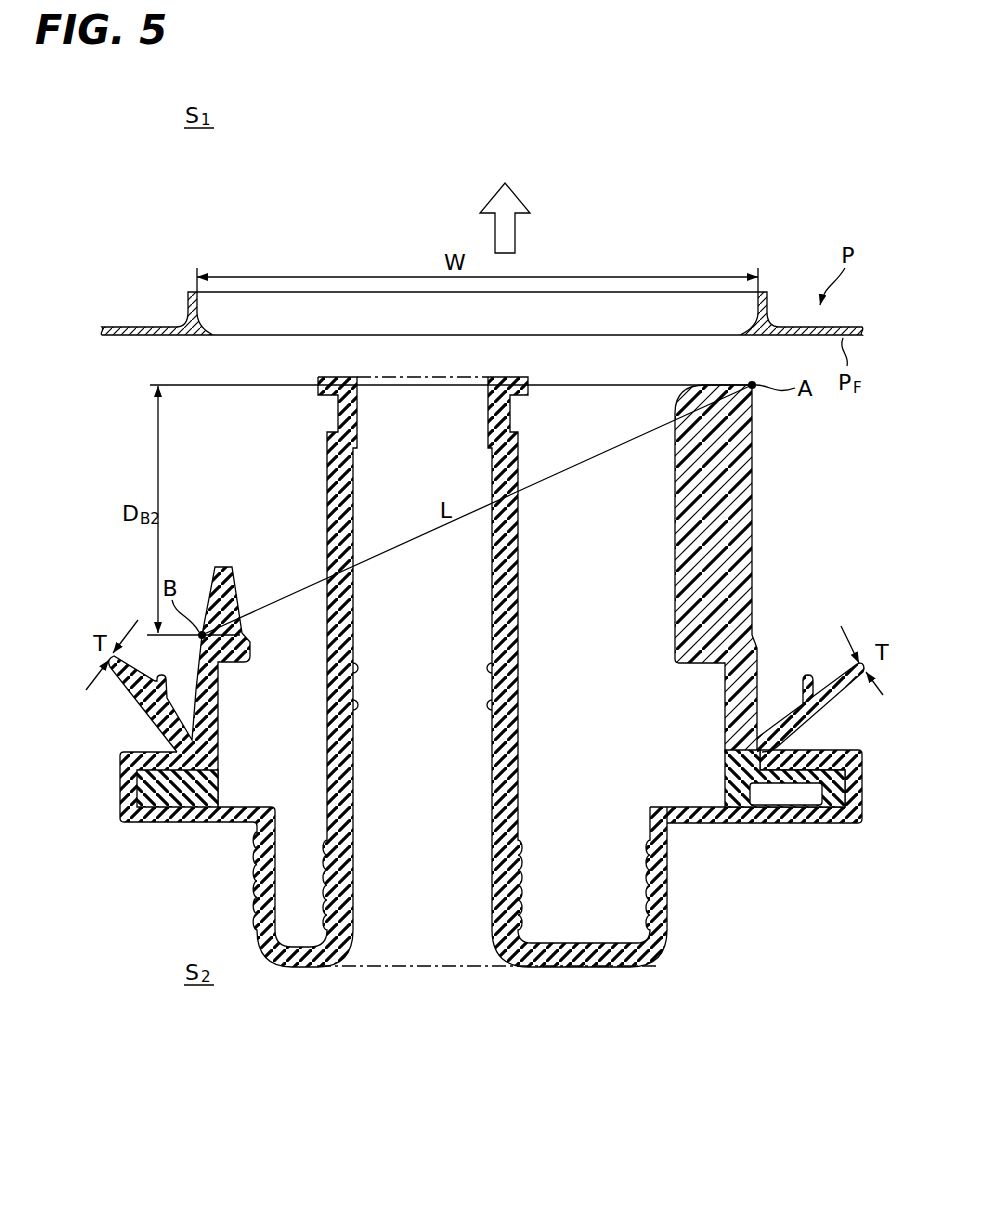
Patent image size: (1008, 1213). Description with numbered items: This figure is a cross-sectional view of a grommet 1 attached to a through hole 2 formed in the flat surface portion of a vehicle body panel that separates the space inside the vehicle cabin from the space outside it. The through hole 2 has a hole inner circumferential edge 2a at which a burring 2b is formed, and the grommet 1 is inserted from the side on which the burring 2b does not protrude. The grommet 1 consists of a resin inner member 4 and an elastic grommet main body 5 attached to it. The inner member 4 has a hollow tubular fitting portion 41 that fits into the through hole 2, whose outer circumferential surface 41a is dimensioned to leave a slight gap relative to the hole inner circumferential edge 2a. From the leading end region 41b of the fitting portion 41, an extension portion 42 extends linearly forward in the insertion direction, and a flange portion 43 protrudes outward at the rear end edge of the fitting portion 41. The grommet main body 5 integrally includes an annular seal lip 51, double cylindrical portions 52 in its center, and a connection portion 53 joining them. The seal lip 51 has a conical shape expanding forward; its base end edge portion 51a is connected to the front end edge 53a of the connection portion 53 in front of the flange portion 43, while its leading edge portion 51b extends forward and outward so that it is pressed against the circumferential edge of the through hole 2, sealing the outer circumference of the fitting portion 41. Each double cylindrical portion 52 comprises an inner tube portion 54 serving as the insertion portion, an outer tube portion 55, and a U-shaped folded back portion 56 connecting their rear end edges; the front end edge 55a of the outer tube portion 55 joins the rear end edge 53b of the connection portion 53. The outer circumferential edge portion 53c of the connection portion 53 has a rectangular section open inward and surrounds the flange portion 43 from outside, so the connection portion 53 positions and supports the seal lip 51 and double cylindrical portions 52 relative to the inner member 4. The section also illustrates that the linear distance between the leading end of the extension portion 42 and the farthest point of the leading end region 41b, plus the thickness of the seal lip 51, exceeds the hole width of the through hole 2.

The grommet 1 is at (262, 1040).
The through hole 2 is at (700, 240).
The hole inner circumferential edge 2a is at (750, 300).
The burring 2b is at (768, 292).
The inner member 4 is at (469, 568).
The fitting portion 41 is at (469, 568).
The outer circumferential surface 41a is at (194, 678).
The leading end region 41b is at (251, 637).
The extension portion 42 is at (754, 442).
The flange portion 43 is at (219, 775).
The grommet main body 5 is at (505, 726).
The seal lip 51 is at (822, 709).
The base end edge portion 51a is at (772, 750).
The leading edge portion 51b is at (848, 682).
The double cylindrical portion 52 is at (411, 726).
The connection portion 53 is at (712, 832).
The front end edge 53a is at (727, 752).
The rear end edge 53b is at (690, 824).
The outer circumferential edge portion 53c is at (862, 815).
The inner tube portion 54 is at (490, 908).
The outer tube portion 55 is at (475, 1028).
The front end edge 55a is at (650, 826).
The folded back portion 56 is at (588, 701).